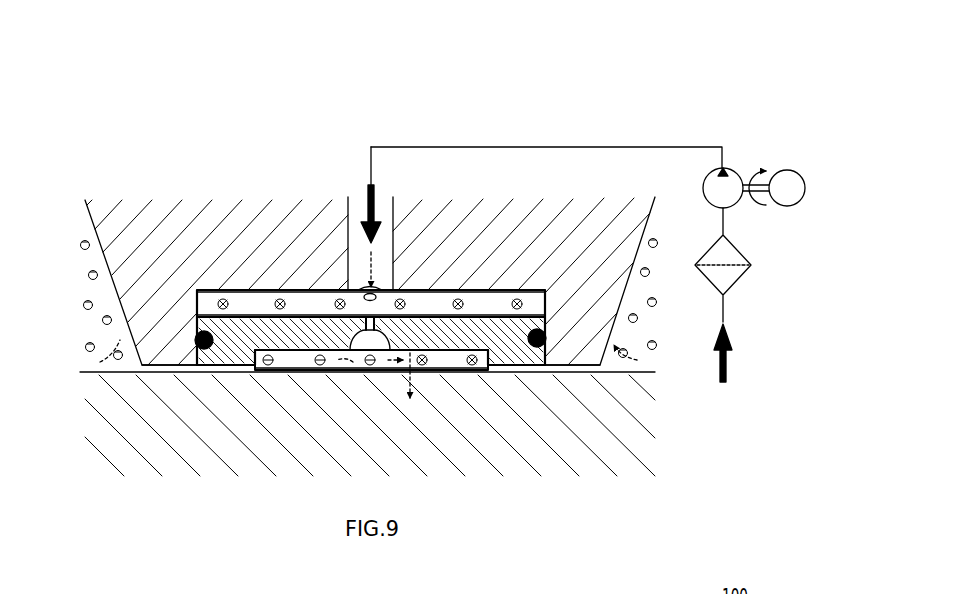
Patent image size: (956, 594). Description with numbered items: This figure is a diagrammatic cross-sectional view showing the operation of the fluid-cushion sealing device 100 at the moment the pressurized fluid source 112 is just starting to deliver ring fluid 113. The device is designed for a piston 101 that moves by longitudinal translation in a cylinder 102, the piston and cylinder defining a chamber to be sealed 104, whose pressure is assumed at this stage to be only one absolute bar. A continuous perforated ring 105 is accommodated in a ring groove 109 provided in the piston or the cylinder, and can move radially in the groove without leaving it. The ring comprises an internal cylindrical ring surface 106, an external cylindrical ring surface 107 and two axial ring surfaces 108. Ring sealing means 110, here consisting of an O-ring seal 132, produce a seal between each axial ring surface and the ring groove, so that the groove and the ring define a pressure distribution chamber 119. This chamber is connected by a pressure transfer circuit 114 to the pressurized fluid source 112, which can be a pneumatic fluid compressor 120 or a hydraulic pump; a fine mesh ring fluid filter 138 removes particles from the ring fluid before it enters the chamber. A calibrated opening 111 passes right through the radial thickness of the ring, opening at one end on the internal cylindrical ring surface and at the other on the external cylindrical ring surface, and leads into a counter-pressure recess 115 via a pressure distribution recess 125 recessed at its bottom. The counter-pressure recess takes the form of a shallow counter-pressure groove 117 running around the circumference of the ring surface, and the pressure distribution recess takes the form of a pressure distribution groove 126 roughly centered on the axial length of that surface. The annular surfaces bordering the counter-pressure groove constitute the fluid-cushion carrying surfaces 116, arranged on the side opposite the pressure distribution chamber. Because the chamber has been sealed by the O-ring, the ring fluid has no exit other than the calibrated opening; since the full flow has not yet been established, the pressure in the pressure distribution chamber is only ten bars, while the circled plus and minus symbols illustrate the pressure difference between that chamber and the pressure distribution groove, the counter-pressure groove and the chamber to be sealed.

The fluid-cushion sealing device 100 is at (655, 90).
The piston 101 is at (127, 228).
The cylinder 102 is at (128, 420).
The chamber to be sealed 104 is at (82, 220).
The continuous perforated ring 105 is at (327, 337).
The internal cylindrical ring surface 106 is at (438, 304).
The external cylindrical ring surface 107 is at (302, 358).
The axial ring surfaces 108 is at (192, 338).
The ring groove 109 is at (257, 296).
The ring sealing means 110 is at (194, 357).
The calibrated opening 111 is at (337, 328).
The pressurized fluid source 112 is at (750, 142).
The ring fluid 113 is at (301, 304).
The pressure transfer circuit 114 is at (392, 143).
The counter-pressure recess 115 is at (438, 358).
The fluid-cushion carrying surface 116 is at (228, 374).
The counter-pressure groove 117 is at (283, 374).
The pressure distribution chamber 119 is at (423, 304).
The pneumatic fluid compressor 120 is at (736, 207).
The pressure distribution recess 125 is at (363, 345).
The pressure distribution groove 126 is at (383, 352).
The O-ring seal 132 is at (200, 294).
The ring fluid filter 138 is at (740, 280).